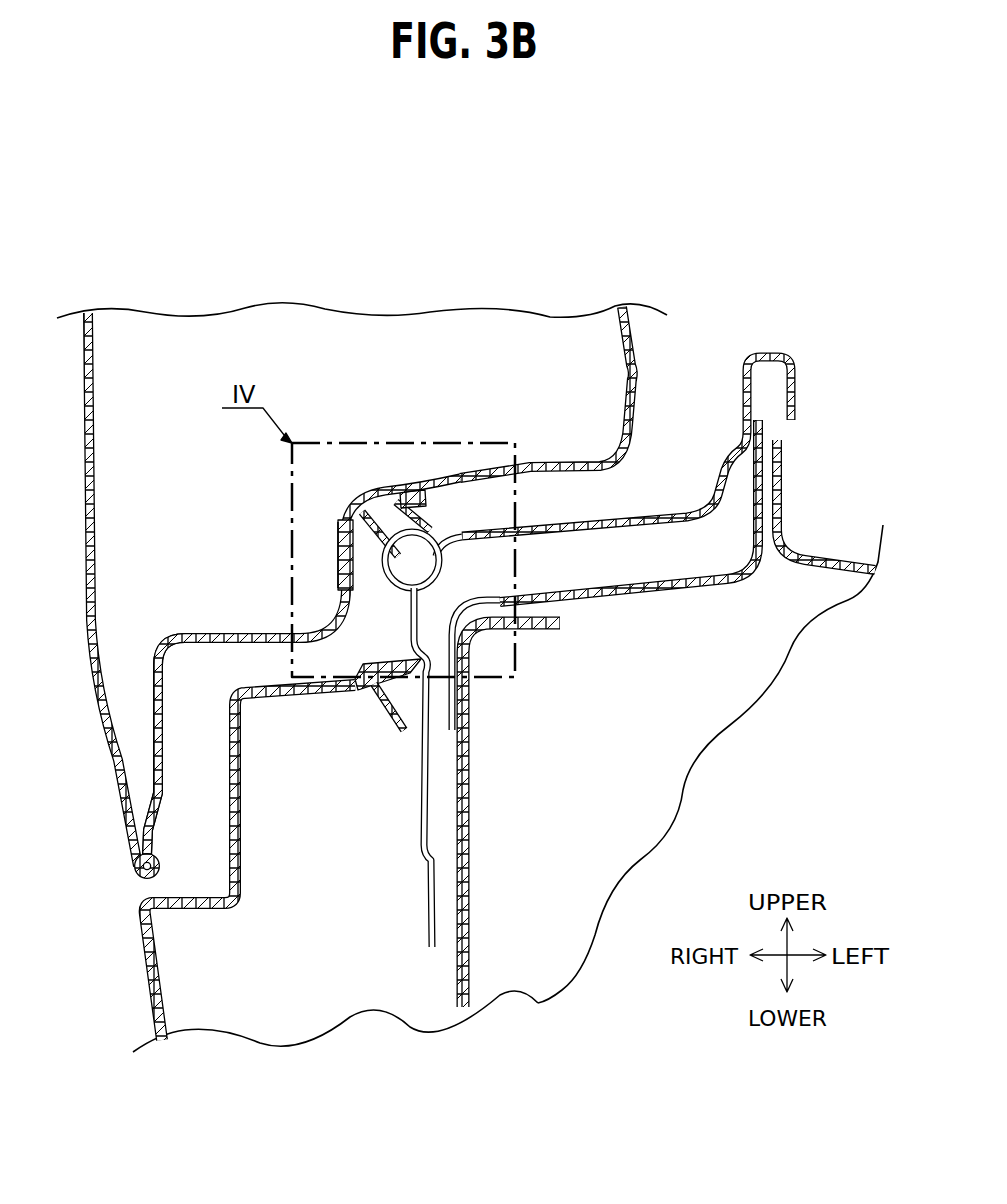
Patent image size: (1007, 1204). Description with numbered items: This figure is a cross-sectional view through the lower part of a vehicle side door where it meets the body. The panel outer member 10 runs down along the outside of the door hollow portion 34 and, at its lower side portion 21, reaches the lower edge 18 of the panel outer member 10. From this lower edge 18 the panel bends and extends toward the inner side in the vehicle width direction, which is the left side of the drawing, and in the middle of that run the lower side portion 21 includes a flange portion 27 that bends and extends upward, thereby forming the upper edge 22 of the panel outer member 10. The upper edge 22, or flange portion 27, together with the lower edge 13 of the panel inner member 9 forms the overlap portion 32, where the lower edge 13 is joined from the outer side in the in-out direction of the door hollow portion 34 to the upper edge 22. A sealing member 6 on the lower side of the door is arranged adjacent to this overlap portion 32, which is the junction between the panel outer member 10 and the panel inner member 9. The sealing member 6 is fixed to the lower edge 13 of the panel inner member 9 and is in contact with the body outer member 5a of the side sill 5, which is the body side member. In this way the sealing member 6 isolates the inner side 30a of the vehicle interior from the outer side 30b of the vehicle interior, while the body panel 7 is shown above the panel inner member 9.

The side sill 5 is at (626, 597).
The body outer member 5a is at (680, 512).
The sealing member 6 is at (443, 528).
The door panel 7 is at (620, 330).
The panel inner member 9 is at (627, 388).
The panel outer member 10 is at (195, 635).
The lower edge of the panel inner member 13 is at (348, 517).
The lower edge of the panel outer member 18 is at (147, 835).
The lower side portion 21 is at (223, 747).
The upper edge of the panel outer member 22 is at (337, 530).
The flange portion 27 is at (333, 578).
The inner side of the vehicle interior 30a is at (633, 509).
The outer side of the vehicle interior 30b is at (220, 758).
The overlap portion 32 is at (330, 565).
The door hollow portion 34 is at (178, 452).